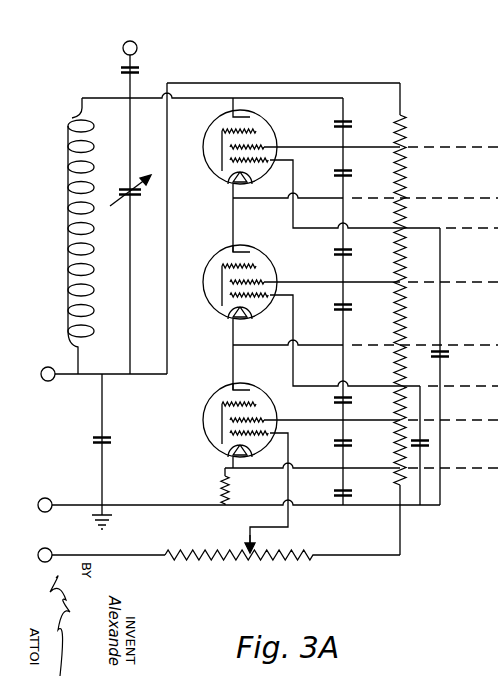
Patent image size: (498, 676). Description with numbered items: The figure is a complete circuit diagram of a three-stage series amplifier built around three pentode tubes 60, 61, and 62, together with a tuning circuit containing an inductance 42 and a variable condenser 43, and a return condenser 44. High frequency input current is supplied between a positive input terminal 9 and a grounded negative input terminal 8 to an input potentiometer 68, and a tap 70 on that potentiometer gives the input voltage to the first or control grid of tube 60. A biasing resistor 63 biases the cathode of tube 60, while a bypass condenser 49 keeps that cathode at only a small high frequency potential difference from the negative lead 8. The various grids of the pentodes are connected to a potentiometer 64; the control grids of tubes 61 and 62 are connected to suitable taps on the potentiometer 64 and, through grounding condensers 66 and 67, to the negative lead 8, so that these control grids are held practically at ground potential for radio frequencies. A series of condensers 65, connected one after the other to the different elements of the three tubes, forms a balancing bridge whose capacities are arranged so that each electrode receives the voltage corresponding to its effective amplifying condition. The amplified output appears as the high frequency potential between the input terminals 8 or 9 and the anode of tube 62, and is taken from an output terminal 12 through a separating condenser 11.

The output terminal 12 is at (123, 45).
The separating condenser 11 is at (120, 70).
The variable condenser 43 is at (125, 190).
The inductance 42 is at (88, 271).
The return condenser 44 is at (92, 440).
The grounded negative input terminal 8 is at (46, 498).
The positive input terminal 9 is at (47, 548).
The pentode tube 62 is at (203, 151).
The pentode tube 61 is at (203, 298).
The pentode tube 60 is at (203, 430).
The biasing resistor 63 is at (222, 490).
The condensers 65 is at (350, 123).
The bypass condenser 49 is at (349, 492).
The potentiometer 64 is at (405, 180).
The grounding condenser 67 is at (444, 358).
The grounding condenser 66 is at (430, 441).
The potentiometer 68 is at (262, 562).
The tap 70 is at (262, 542).